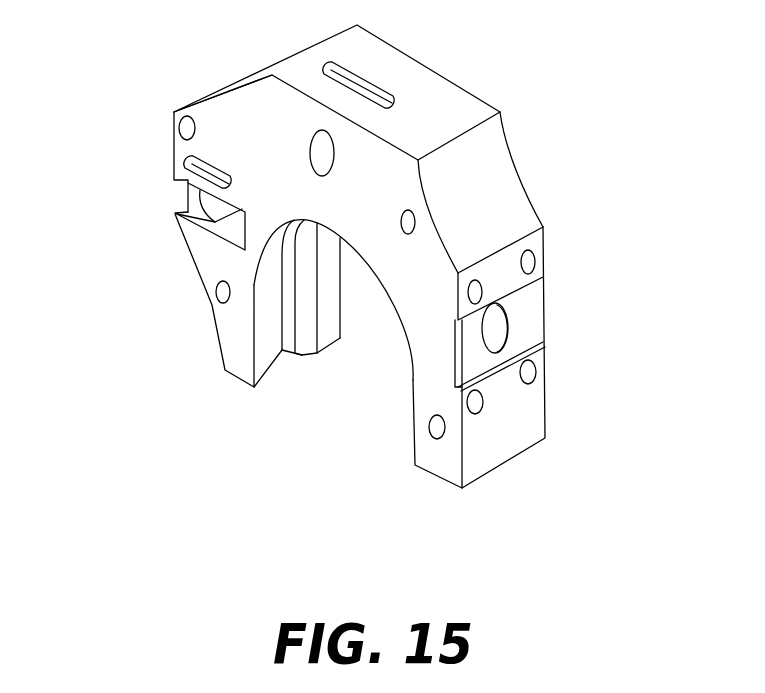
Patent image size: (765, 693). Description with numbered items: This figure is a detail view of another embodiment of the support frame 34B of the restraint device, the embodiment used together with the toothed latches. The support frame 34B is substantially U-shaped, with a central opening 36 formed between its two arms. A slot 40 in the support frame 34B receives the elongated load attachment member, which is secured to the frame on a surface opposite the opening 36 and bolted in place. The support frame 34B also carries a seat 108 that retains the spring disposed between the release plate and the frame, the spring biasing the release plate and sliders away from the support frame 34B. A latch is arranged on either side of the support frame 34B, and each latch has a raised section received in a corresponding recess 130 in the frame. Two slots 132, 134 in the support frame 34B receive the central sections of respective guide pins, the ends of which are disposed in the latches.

The support frame 34B is at (465, 102).
The central opening 36 is at (413, 377).
The slot 40 is at (365, 77).
The seat 108 is at (497, 327).
The recess 130 is at (188, 207).
The slot 132 is at (227, 235).
The slot 134 is at (207, 168).